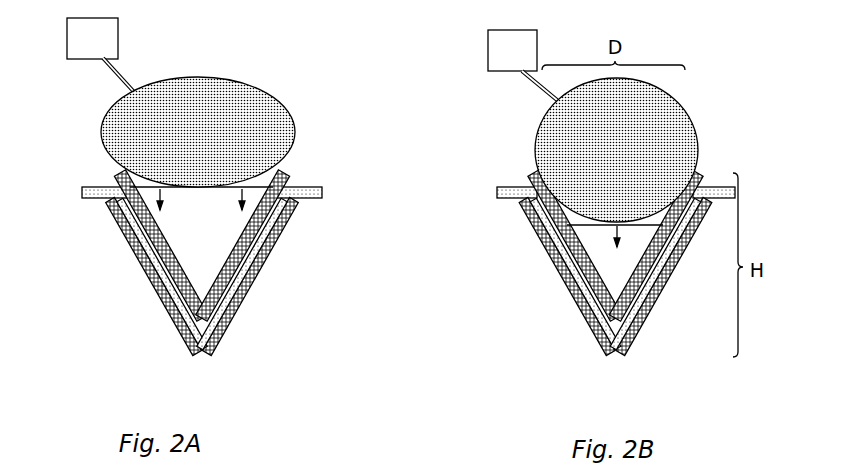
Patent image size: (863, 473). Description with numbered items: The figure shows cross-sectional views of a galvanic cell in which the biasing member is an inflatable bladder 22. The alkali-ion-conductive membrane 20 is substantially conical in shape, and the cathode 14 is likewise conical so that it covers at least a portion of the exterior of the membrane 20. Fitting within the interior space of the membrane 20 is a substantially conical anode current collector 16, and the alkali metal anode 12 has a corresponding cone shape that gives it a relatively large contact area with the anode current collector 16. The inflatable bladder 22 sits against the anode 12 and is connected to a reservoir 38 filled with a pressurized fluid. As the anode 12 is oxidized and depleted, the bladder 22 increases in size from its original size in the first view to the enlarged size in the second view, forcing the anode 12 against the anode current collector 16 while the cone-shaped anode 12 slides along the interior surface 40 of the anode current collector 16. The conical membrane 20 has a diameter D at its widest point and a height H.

In FIG. 2A, the reservoir 38 is at (100, 33).
In FIG. 2B, the reservoir 38 is at (497, 53).
In FIG. 2A, the inflatable bladder 22 is at (143, 110).
In FIG. 2B, the inflatable bladder 22 is at (640, 120).
In FIG. 2A, the interior surface of the anode current collector 40 is at (273, 187).
In FIG. 2A, the alkali metal anode electrode 12 is at (195, 235).
In FIG. 2B, the alkali metal anode electrode 12 is at (597, 252).
In FIG. 2A, the anode current collector 16 is at (223, 282).
In FIG. 2B, the anode current collector 16 is at (615, 245).
In FIG. 2A, the alkali-ion-conductive membrane 20 is at (223, 308).
In FIG. 2B, the alkali-ion-conductive membrane 20 is at (615, 273).
In FIG. 2A, the cathode electrode 14 is at (222, 345).
In FIG. 2B, the cathode electrode 14 is at (615, 277).